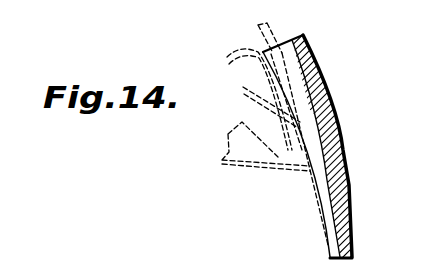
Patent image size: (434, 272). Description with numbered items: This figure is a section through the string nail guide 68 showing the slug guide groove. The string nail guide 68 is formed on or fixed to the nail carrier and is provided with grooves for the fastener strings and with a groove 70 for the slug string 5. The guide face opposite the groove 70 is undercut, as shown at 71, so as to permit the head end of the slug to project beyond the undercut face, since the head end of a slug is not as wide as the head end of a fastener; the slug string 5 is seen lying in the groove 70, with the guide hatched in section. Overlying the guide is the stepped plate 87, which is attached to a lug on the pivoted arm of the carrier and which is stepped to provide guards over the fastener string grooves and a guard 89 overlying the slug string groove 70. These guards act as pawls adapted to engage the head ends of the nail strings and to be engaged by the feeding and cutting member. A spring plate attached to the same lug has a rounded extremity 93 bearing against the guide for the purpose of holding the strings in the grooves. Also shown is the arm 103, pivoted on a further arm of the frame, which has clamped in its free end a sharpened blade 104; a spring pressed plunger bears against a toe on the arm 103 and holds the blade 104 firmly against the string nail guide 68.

The slug string 5 is at (257, 29).
The string nail guide 68 is at (313, 97).
The groove for the slug string 70 is at (332, 198).
The undercut 71 is at (326, 248).
The plate 87 is at (253, 92).
The guard 89 is at (310, 166).
The rounded extremity 93 is at (246, 53).
The arm 103 is at (228, 134).
The sharpened blade 104 is at (300, 170).